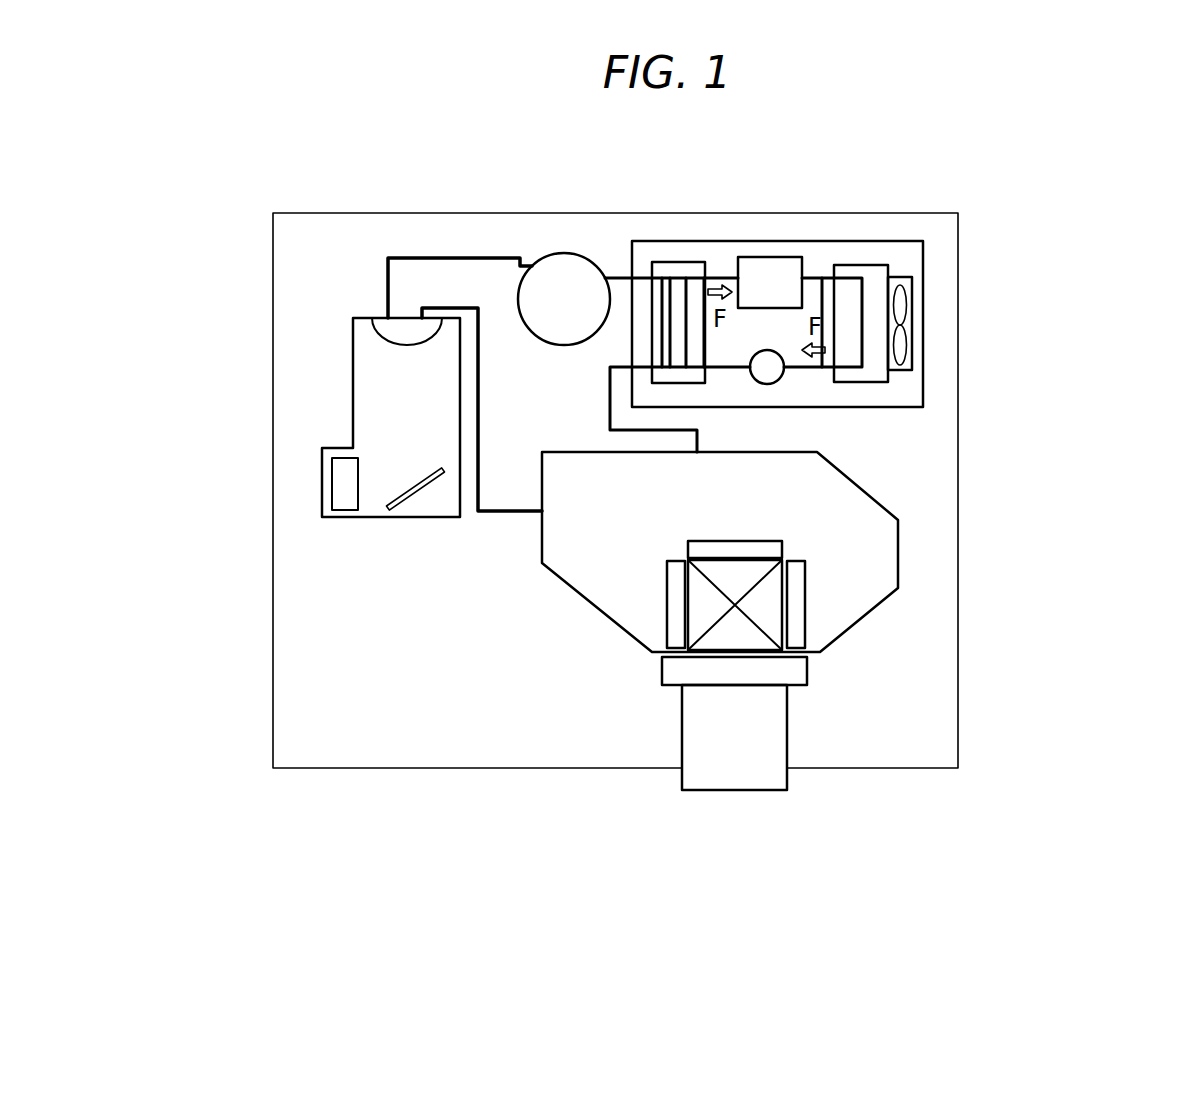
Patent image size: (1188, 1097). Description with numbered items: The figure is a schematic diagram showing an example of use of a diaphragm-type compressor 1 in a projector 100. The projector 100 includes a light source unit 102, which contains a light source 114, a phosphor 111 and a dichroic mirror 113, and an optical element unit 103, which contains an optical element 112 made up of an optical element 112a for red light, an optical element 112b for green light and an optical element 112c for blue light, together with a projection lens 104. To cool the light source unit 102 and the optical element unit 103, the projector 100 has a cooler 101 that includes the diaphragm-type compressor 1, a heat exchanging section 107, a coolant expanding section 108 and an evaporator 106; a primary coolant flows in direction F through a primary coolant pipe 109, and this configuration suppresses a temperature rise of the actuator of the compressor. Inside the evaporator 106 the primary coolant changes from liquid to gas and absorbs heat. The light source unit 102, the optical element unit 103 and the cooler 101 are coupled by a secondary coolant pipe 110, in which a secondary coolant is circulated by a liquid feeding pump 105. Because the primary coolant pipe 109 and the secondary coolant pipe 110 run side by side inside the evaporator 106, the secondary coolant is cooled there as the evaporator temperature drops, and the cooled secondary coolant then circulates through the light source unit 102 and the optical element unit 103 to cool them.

The projector 100 is at (1003, 232).
The diaphragm-type compressor 1 is at (768, 267).
The cooler 101 is at (723, 240).
The light source unit 102 is at (378, 520).
The optical element unit 103 is at (553, 573).
The projection lens 104 is at (712, 750).
The liquid feeding pump 105 is at (560, 270).
The evaporator 106 is at (677, 273).
The heat exchanging section 107 is at (875, 273).
The coolant expanding section 108 is at (768, 372).
The primary coolant pipe 109 is at (822, 277).
The secondary coolant pipe 110 is at (450, 257).
The phosphor 111 is at (343, 477).
The optical element 112 is at (810, 653).
The optical element for red light 112a is at (675, 600).
The optical element for green light 112b is at (742, 545).
The optical element for blue light 112c is at (797, 603).
The dichroic mirror 113 is at (418, 495).
The light source 114 is at (402, 332).